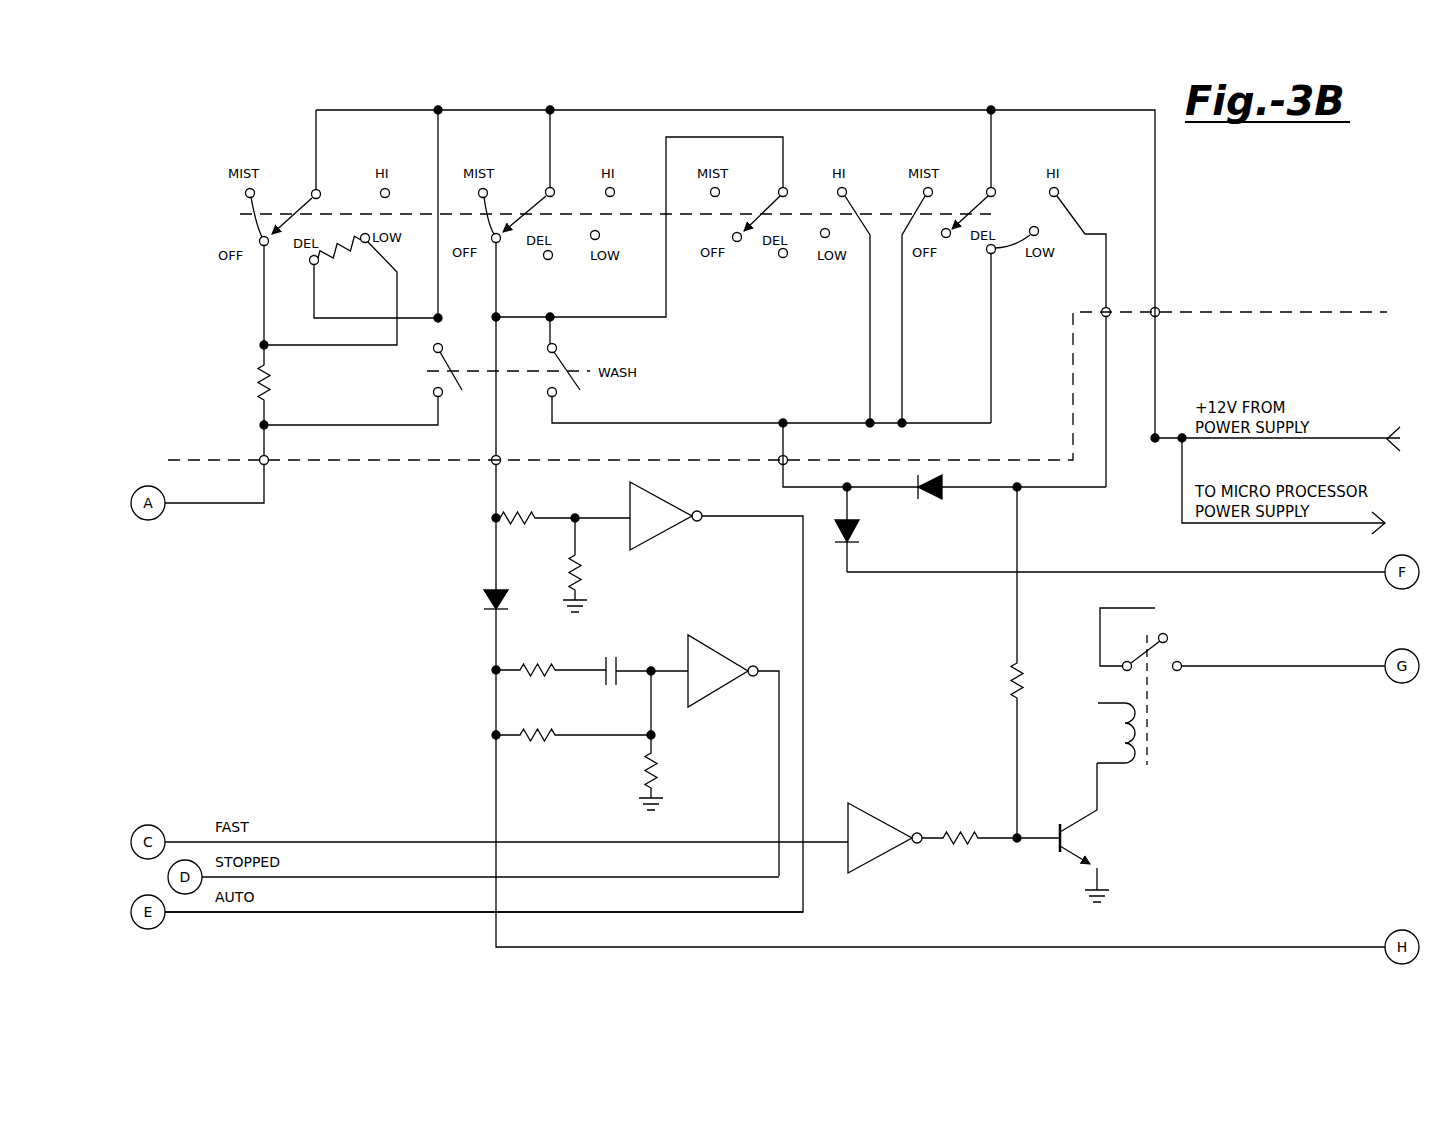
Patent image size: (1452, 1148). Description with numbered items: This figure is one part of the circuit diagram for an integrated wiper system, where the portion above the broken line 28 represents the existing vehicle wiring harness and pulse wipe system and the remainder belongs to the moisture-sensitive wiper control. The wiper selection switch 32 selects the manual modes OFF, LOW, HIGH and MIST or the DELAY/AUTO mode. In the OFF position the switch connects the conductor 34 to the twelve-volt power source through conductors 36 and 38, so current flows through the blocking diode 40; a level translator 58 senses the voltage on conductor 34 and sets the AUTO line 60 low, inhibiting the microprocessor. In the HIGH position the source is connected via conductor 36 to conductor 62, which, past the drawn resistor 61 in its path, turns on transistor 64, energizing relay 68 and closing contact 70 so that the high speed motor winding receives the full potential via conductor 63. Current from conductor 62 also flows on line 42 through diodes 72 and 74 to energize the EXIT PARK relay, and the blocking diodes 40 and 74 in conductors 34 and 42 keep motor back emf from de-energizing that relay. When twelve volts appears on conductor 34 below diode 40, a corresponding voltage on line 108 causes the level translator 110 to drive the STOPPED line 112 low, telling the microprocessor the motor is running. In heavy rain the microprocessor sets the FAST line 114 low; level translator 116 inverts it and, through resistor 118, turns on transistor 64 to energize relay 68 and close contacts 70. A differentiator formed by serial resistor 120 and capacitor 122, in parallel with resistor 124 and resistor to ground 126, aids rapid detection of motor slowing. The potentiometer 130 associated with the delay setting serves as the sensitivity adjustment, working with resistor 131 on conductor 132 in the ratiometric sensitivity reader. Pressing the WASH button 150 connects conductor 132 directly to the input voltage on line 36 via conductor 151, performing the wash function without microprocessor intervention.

The broken line 28 is at (1247, 312).
The wiper selection switch 32 is at (343, 214).
The conductor 34 is at (496, 400).
The conductor 36 is at (870, 110).
The conductor 38 is at (1362, 438).
The blocking diode 40 is at (485, 600).
The conductor 42 is at (852, 500).
The level translator 58 is at (655, 490).
The AUTO line 60 is at (340, 912).
The resistor 61 is at (1010, 683).
The conductor 62 is at (1106, 340).
The conductor 63 is at (1398, 688).
The transistor 64 is at (1090, 852).
The relay 68 is at (1112, 760).
The contact 70 is at (1175, 652).
The diode 72 is at (935, 500).
The blocking diode 74 is at (855, 540).
The line 108 is at (670, 668).
The level translator 110 is at (735, 648).
The STOPPED line 112 is at (778, 815).
The FAST line 114 is at (350, 842).
The level translator 116 is at (863, 805).
The resistor 118 is at (950, 845).
The serial resistor 120 is at (535, 676).
The capacitor 122 is at (597, 660).
The resistor 124 is at (540, 741).
The resistor to ground 126 is at (660, 780).
The potentiometer 130 is at (323, 263).
The resistor 131 is at (268, 378).
The conductor 132 is at (230, 503).
The WASH button 150 is at (563, 360).
The conductor 151 is at (438, 280).